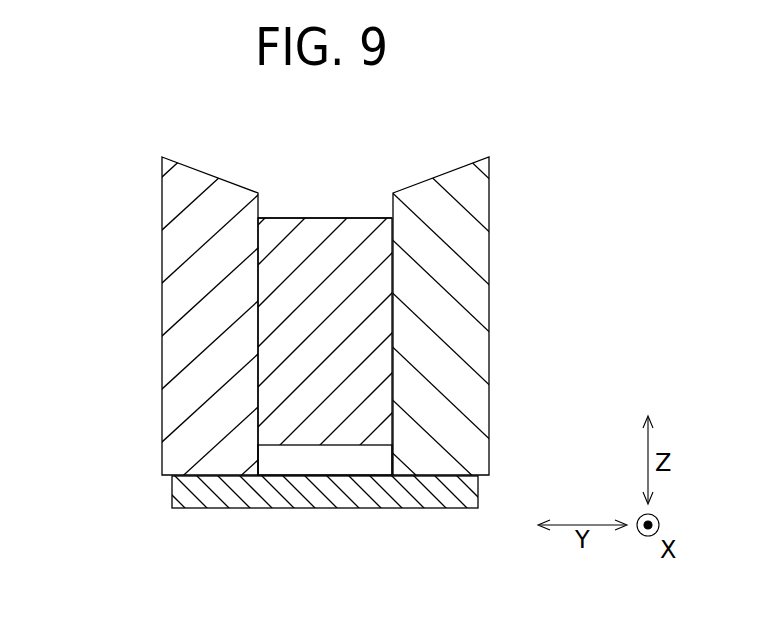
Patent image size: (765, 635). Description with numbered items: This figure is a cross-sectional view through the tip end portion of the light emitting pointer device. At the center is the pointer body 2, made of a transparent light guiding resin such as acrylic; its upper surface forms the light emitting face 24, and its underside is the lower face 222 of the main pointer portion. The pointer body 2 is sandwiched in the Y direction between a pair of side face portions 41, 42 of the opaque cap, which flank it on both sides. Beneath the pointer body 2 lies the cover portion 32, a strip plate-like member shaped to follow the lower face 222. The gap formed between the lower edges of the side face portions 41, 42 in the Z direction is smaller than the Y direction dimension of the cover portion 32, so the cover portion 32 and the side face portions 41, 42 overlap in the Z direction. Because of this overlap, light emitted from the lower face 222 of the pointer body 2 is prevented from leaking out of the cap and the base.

The pointer body 2 is at (367, 230).
The light emitting face 24 is at (295, 218).
The lower face 222 is at (340, 445).
The cover portion 32 is at (330, 495).
The side face portion 41 is at (470, 298).
The side face portion 42 is at (180, 298).